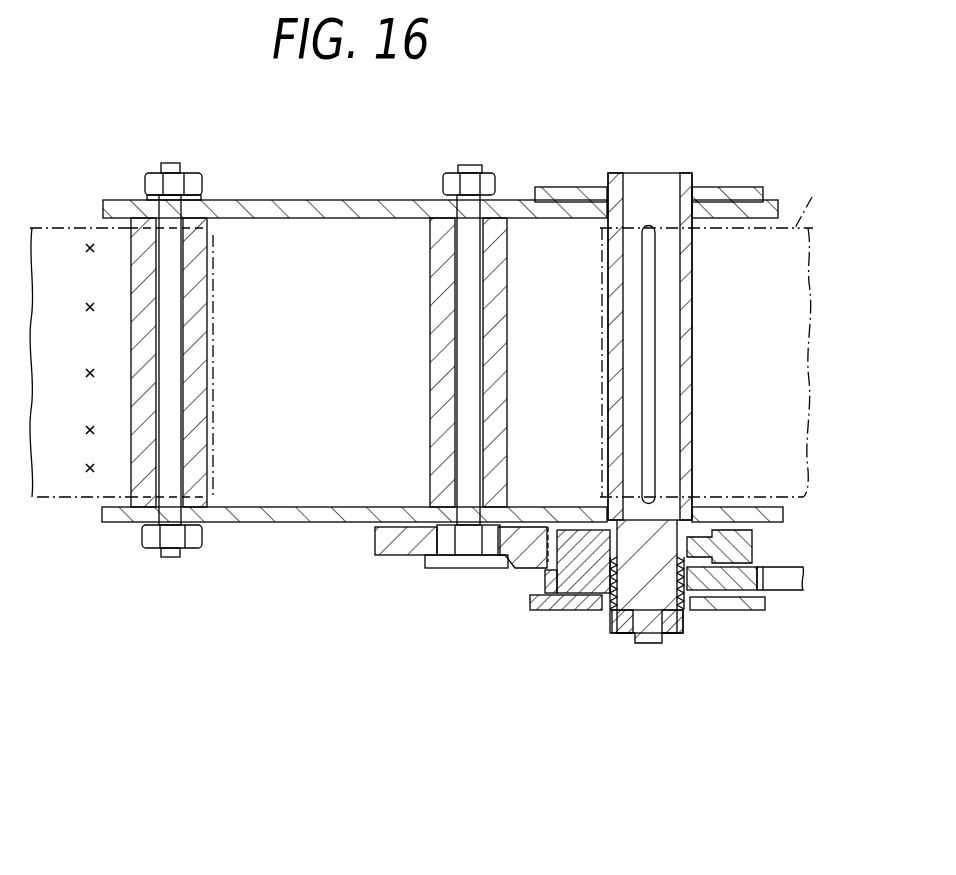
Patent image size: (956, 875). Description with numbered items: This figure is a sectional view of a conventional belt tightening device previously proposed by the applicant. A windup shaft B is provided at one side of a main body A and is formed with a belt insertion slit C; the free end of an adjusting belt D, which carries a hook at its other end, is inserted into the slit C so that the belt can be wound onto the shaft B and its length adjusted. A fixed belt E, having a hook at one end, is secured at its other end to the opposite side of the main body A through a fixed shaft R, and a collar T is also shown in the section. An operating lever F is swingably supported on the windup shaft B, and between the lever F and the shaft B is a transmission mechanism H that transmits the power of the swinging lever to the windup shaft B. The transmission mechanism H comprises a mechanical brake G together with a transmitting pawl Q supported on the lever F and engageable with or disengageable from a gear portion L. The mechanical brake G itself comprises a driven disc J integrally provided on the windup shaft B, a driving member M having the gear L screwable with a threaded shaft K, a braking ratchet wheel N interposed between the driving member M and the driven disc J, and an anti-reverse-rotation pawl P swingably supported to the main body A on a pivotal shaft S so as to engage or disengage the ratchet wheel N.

The main body A is at (308, 200).
The windup shaft B is at (692, 350).
The belt insertion slit C is at (656, 288).
The adjusting belt D is at (713, 335).
The fixed belt E is at (80, 228).
The operating lever F is at (723, 186).
The mechanical brake G is at (521, 587).
The transmission mechanism H is at (777, 605).
The driven disc J is at (700, 525).
The threaded shaft K is at (587, 583).
The gear L is at (552, 583).
The driving member M is at (558, 593).
The braking ratchet wheel N is at (553, 545).
The anti-reverse-rotation pawl P is at (417, 545).
The transmitting pawl Q is at (778, 578).
The fixed shaft R is at (173, 333).
The pivotal shaft S is at (465, 385).
The collar T is at (198, 417).